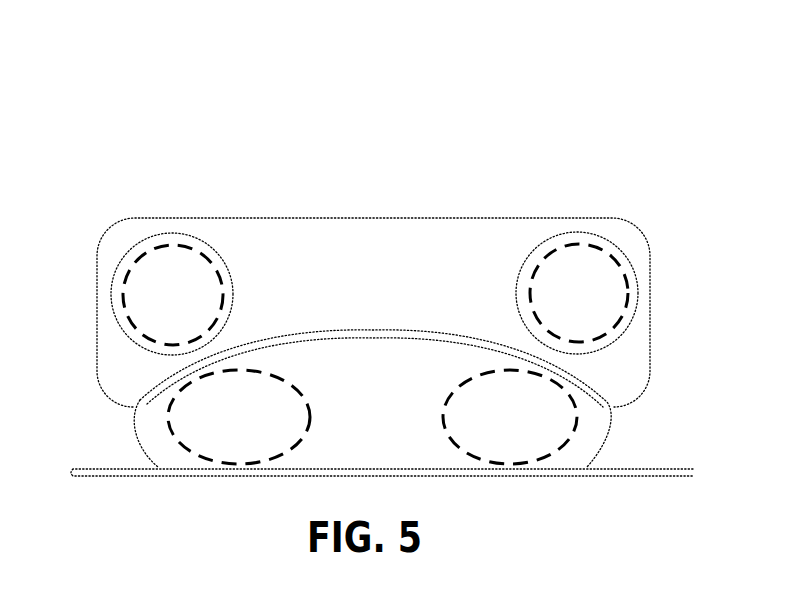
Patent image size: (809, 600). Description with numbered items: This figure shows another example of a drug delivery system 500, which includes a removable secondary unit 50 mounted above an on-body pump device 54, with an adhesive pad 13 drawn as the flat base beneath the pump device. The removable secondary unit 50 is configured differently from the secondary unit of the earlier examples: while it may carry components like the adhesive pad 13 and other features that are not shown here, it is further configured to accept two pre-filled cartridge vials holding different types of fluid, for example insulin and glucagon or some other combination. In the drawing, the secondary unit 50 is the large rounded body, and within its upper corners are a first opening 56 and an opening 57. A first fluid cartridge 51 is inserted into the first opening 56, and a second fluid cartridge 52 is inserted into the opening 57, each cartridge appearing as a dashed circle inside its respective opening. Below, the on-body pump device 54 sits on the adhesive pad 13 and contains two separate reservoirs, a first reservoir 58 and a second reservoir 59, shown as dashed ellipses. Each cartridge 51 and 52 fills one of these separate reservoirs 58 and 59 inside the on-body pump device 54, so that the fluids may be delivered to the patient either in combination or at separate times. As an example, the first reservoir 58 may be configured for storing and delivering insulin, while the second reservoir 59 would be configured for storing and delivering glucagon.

The drug delivery system 500 is at (305, 149).
The removable secondary unit 50 is at (650, 357).
The first fluid cartridge 51 is at (187, 309).
The second fluid cartridge 52 is at (593, 305).
The on-body pump device 54 is at (612, 423).
The first opening 56 is at (167, 233).
The opening 57 is at (522, 262).
The first reservoir 58 is at (255, 431).
The second reservoir 59 is at (522, 431).
The adhesive pad 13 is at (693, 472).